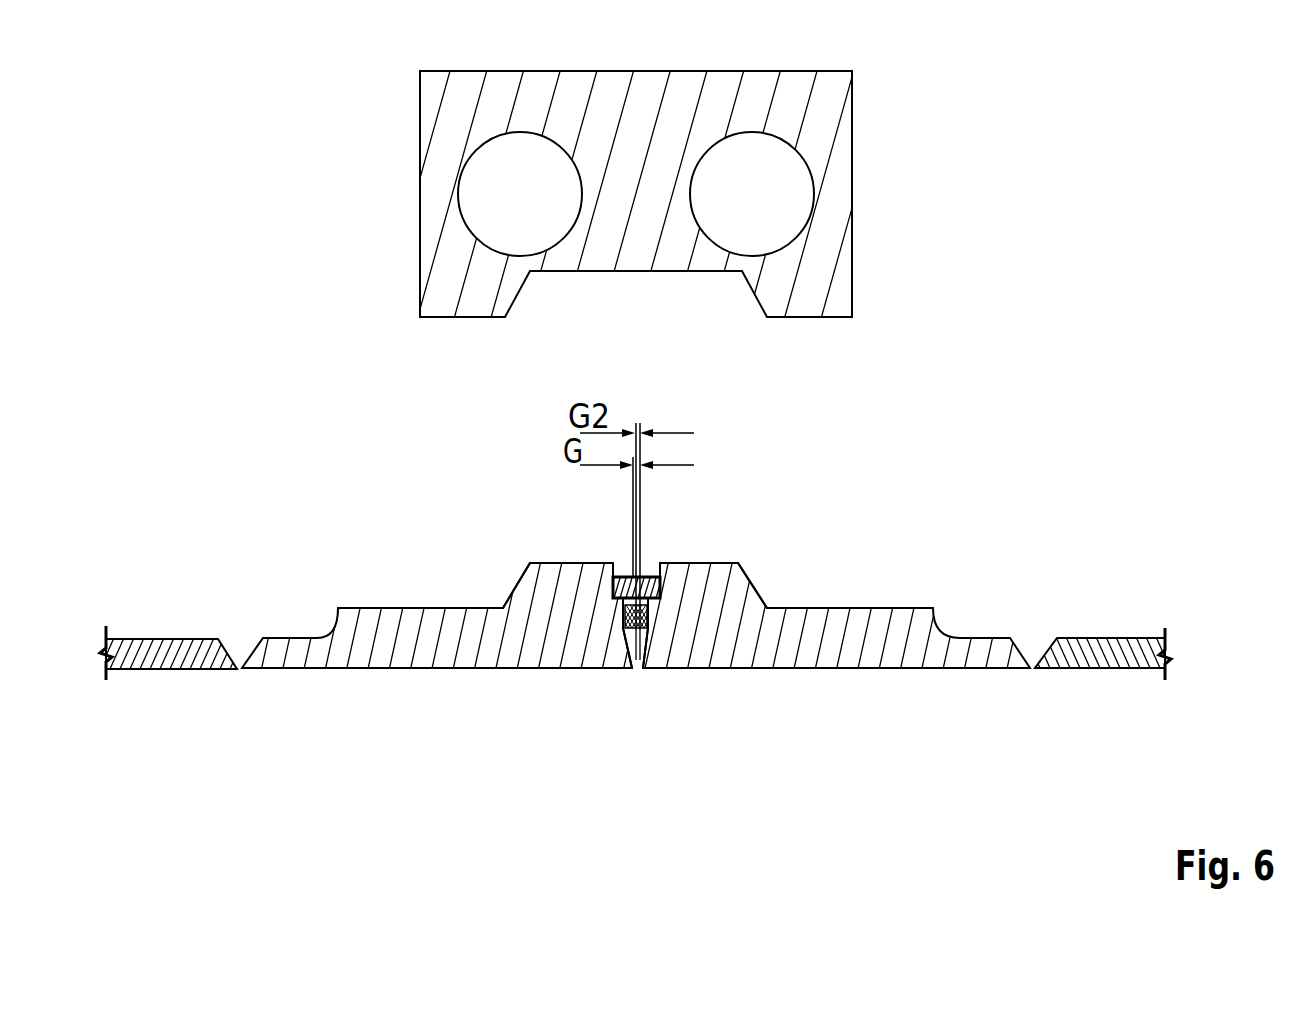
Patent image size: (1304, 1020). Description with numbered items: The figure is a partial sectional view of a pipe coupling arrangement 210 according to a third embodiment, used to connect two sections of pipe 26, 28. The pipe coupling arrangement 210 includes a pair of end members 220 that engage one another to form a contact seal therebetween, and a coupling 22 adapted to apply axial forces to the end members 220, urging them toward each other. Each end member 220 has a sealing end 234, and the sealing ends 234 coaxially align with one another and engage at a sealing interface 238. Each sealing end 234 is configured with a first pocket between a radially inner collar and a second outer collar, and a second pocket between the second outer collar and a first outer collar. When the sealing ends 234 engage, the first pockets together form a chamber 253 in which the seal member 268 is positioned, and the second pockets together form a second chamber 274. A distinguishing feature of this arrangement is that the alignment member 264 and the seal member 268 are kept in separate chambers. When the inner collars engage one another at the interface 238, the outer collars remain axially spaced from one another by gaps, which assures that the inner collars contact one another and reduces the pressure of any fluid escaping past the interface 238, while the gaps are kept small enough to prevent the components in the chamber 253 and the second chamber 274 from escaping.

The pipe coupling arrangement 210 is at (1125, 96).
The coupling 22 is at (835, 120).
The section of pipe 26 is at (167, 662).
The section of pipe 28 is at (1112, 663).
The end member 220 is at (317, 660).
The sealing end 234 is at (530, 650).
The chamber 253 is at (622, 648).
The sealing interface 238 is at (640, 657).
The alignment member 264 is at (618, 577).
The seal member 268 is at (650, 623).
The second chamber 274 is at (650, 577).